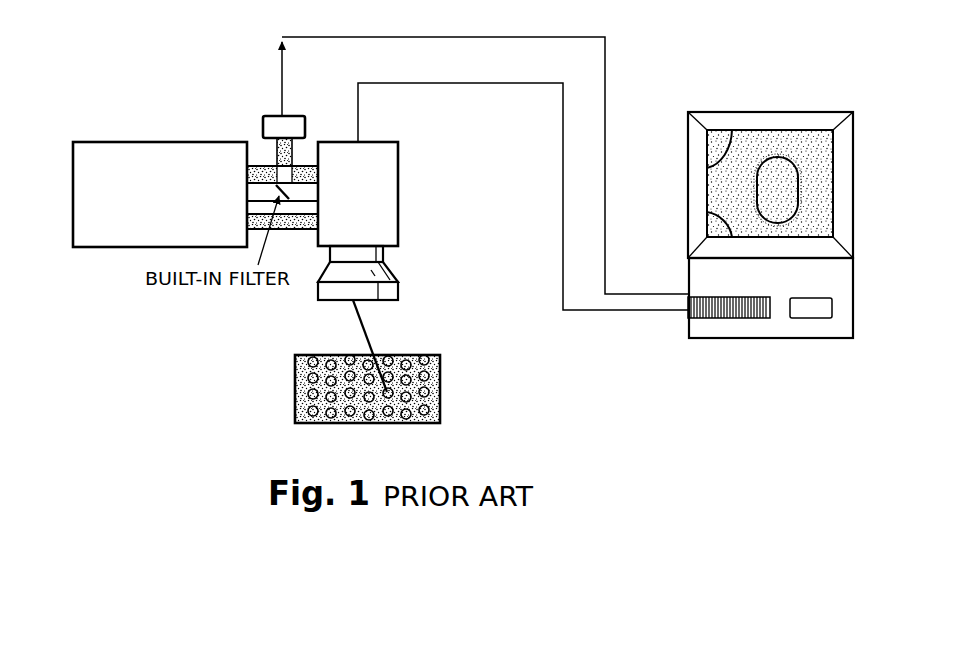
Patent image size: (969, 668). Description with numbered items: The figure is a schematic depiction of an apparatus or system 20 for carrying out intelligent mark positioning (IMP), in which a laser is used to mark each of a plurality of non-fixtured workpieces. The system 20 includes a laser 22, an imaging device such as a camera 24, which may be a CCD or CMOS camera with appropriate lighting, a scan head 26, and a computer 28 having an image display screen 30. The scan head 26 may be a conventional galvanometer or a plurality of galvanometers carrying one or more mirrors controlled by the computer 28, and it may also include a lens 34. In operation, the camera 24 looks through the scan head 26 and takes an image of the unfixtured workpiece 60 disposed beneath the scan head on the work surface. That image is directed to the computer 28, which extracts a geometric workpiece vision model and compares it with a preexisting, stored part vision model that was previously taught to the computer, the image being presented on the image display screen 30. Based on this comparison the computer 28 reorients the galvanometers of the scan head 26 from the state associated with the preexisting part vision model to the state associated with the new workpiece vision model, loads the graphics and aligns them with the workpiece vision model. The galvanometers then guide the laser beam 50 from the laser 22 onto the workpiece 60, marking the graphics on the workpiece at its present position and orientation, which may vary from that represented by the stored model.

The apparatus or system 20 is at (96, 83).
The laser 22 is at (140, 215).
The camera 24 is at (263, 128).
The scan head 26 is at (382, 177).
The computer 28 is at (735, 328).
The image display screen 30 is at (740, 142).
The lens 34 is at (392, 275).
The laser beam 50 is at (371, 330).
The unfixtured workpiece 60 is at (296, 396).